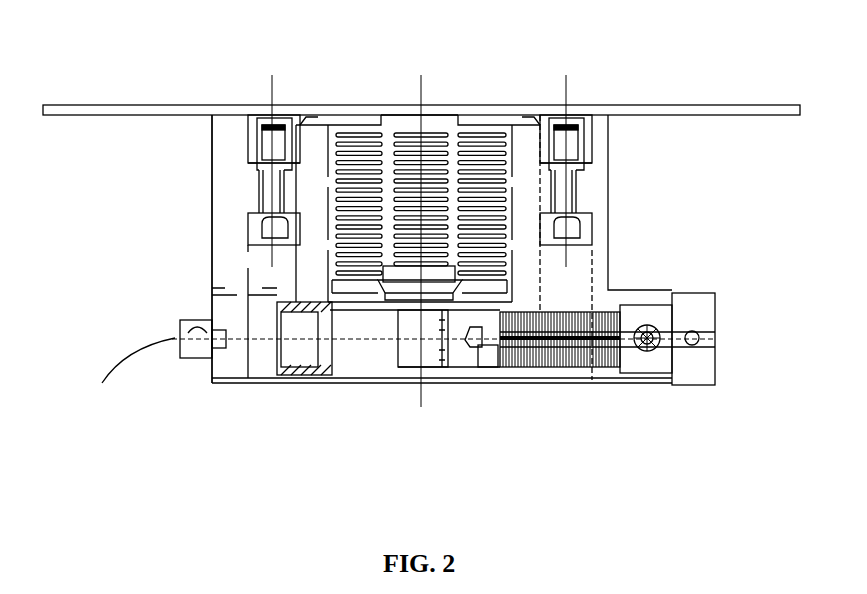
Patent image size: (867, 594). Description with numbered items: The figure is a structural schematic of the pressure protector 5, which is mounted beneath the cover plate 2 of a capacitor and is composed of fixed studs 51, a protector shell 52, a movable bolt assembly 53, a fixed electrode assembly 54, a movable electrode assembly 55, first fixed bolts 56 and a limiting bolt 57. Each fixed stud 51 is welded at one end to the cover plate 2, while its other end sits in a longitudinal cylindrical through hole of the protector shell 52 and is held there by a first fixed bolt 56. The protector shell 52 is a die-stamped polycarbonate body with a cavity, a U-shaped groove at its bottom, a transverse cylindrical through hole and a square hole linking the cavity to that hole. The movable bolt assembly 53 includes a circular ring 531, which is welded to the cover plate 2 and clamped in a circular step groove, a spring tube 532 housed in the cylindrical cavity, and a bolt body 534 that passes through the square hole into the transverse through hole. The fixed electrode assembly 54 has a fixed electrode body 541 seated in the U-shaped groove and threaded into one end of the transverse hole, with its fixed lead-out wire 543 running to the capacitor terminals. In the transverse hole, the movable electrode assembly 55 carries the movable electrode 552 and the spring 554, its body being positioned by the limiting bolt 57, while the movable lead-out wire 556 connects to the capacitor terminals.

The cover plate 2 is at (113, 118).
The pressure protector 5 is at (611, 176).
The fixed stud 51 is at (250, 138).
The protector shell 52 is at (209, 242).
The movable bolt assembly 53 is at (358, 148).
The circular ring 531 is at (497, 110).
The spring tube 532 is at (497, 245).
The bolt body 534 is at (396, 349).
The fixed electrode assembly 54 is at (200, 359).
The fixed electrode body 541 is at (272, 364).
The fixed lead-out wire 543 is at (131, 356).
The movable electrode assembly 55 is at (698, 322).
The movable electrode 552 is at (445, 359).
The spring 554 is at (525, 358).
The movable lead-out wire 556 is at (773, 412).
The first fixed bolt 56 is at (247, 226).
The limiting bolt 57 is at (652, 348).